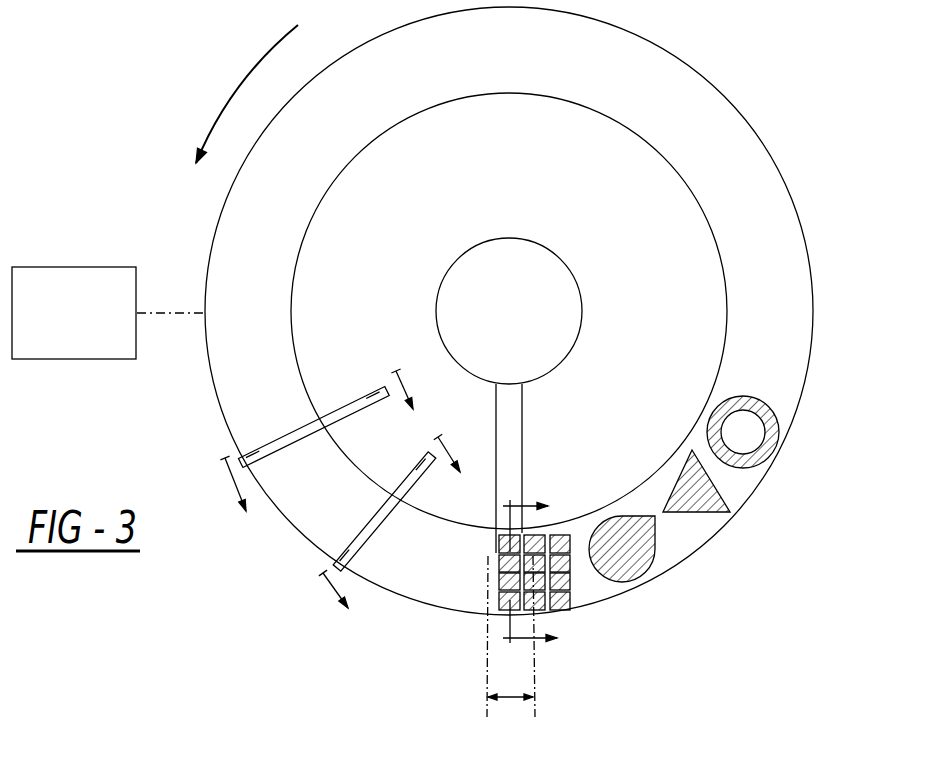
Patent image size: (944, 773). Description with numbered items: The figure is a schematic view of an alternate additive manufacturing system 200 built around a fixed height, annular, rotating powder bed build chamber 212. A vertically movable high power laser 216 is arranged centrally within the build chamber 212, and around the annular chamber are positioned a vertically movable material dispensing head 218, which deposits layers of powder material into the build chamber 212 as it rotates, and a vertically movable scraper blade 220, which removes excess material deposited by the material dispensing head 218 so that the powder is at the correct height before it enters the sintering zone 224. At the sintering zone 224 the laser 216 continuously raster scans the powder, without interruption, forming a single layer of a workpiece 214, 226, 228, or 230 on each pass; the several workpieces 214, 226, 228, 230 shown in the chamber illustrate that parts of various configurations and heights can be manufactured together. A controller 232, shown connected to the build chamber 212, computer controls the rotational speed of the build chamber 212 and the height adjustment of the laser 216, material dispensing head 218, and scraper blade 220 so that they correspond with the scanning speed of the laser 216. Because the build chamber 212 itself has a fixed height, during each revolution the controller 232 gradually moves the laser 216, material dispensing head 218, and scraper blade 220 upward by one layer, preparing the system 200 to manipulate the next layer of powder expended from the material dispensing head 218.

The additive manufacturing system 200 is at (150, 82).
The build chamber 212 is at (647, 82).
The workpiece 214 is at (540, 583).
The laser 216 is at (532, 273).
The material dispensing head 218 is at (266, 446).
The scraper blade 220 is at (367, 542).
The sintering zone 224 is at (511, 648).
The workpiece 226 is at (628, 555).
The workpiece 228 is at (705, 495).
The workpiece 230 is at (770, 428).
The controller 232 is at (87, 266).